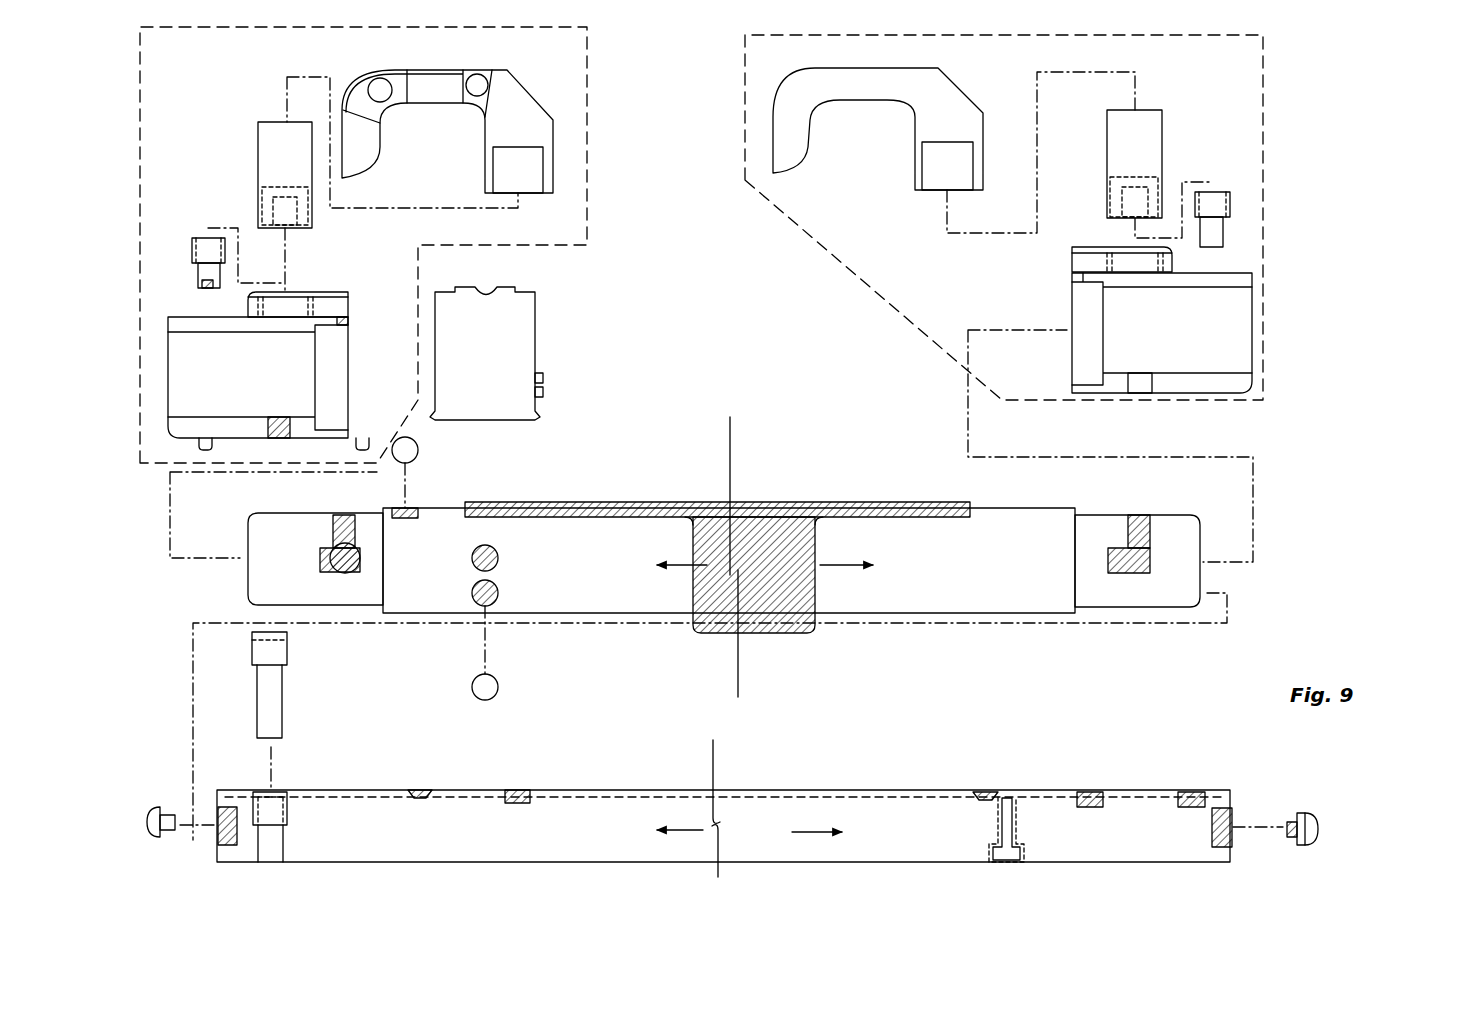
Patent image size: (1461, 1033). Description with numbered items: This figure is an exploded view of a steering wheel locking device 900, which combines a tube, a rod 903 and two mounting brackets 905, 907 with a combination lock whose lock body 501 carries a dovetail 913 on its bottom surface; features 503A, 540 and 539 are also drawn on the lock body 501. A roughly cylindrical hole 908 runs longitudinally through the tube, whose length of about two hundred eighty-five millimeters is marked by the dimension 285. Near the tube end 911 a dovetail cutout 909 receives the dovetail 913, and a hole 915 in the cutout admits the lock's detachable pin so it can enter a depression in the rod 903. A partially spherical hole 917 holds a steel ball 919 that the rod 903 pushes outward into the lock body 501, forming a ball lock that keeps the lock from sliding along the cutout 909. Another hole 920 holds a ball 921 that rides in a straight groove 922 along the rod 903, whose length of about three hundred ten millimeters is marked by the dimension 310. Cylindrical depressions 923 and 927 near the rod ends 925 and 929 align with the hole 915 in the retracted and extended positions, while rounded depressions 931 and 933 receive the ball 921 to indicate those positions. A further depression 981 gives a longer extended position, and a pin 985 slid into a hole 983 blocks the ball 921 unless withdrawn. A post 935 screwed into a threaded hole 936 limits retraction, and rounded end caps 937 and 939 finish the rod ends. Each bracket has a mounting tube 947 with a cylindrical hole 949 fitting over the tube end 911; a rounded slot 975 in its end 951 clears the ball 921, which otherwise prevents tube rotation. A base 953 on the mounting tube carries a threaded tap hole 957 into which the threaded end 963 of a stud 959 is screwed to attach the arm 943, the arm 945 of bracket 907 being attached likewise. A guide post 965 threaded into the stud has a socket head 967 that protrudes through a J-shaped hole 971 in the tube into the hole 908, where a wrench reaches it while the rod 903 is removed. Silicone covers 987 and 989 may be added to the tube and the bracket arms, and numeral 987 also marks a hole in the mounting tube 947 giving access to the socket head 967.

The steering wheel locking device 900 is at (678, 108).
The mounting bracket 905 is at (588, 172).
The mounting bracket 907 is at (820, 246).
The silicone cover 989 is at (448, 68).
The arm 943 is at (397, 82).
The arm 945 is at (845, 103).
The stud 959 is at (258, 142).
The protruding end 963 is at (299, 230).
The guide post 965 is at (192, 250).
The socket head 967 is at (210, 288).
The base 953 is at (332, 292).
The threaded tap hole 957 is at (300, 292).
The cylindrical hole 949 is at (334, 358).
The rounded slot 975 is at (348, 322).
The mounting tube 947 is at (205, 438).
The end 951 is at (365, 438).
The silicone cover 987 is at (282, 444).
The end 911 is at (273, 515).
The J-shaped hole 971 is at (703, 659).
The lock body 501 is at (535, 347).
The cartridge tab 503A is at (503, 290).
The latch 540 is at (548, 387).
The catch 539 is at (537, 405).
The dovetail 913 is at (527, 420).
The steel ball 921 is at (418, 450).
The hole 920 is at (415, 497).
The dovetail cutout 909 is at (513, 535).
The tube length dimension 285 is at (740, 573).
The hole 915 is at (498, 563).
The partially spherical hole 917 is at (498, 600).
The steel ball 919 is at (500, 687).
The cylindrical hole 908 is at (1202, 575).
The post 935 is at (304, 709).
The rod 903 is at (765, 783).
The rod length dimension 310 is at (720, 830).
The groove 922 is at (623, 790).
The end 925 is at (217, 850).
The threaded hole 936 is at (278, 783).
The rounded end cap 937 is at (162, 807).
The rounded depression 931 is at (420, 790).
The cylindrical depression 923 is at (525, 790).
The rounded depression 933 is at (987, 792).
The hole 983 is at (1015, 830).
The pin 985 is at (1012, 860).
The second cylindrical depression 927 is at (1092, 792).
The depression 981 is at (1197, 792).
The opposite end 929 is at (1232, 852).
The rounded end cap 939 is at (1315, 828).